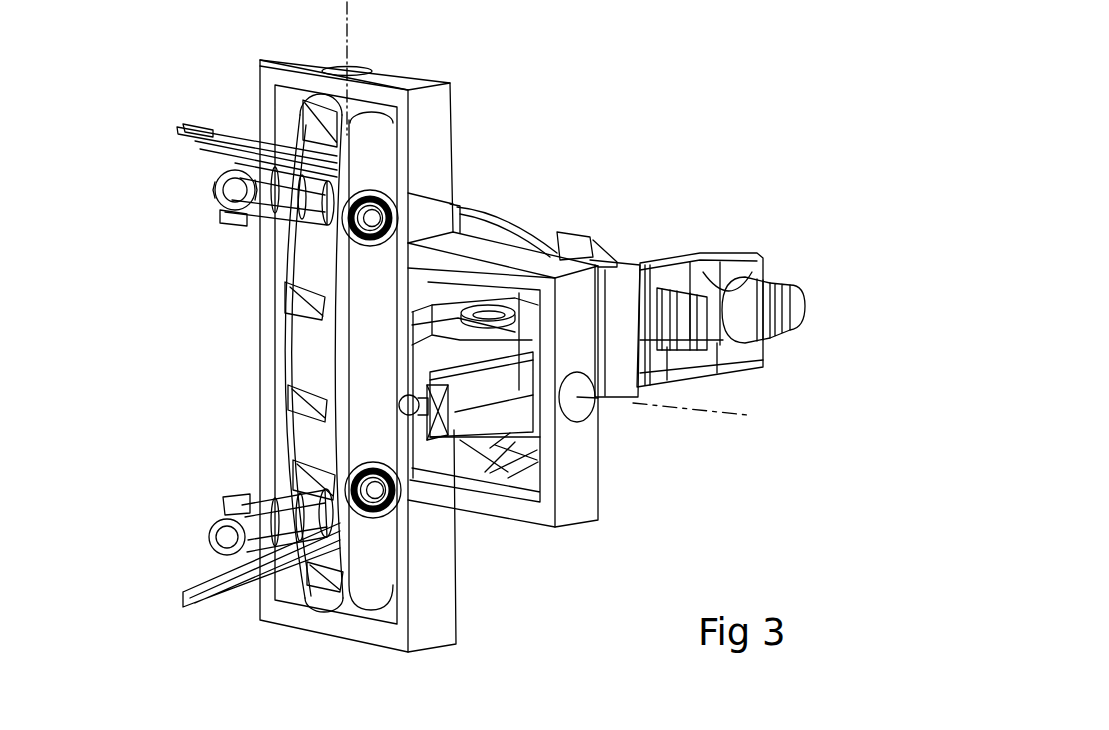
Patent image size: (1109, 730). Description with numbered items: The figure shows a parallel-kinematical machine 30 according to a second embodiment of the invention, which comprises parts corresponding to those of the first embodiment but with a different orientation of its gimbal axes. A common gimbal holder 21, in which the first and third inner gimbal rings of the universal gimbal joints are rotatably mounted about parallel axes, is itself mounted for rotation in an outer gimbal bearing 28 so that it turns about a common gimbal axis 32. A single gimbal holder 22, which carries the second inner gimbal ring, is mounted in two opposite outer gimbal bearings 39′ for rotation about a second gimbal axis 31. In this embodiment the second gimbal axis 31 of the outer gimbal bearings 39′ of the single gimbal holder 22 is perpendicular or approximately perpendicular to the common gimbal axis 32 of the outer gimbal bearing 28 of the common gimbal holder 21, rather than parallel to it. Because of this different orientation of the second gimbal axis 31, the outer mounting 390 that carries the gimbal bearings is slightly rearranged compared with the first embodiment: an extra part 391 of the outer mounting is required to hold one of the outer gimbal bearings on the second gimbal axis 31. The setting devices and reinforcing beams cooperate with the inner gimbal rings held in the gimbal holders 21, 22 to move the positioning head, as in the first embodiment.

The common gimbal holder 21 is at (353, 298).
The single gimbal holder 22 is at (443, 307).
The outer gimbal bearing 28 is at (324, 67).
The parallel-kinematical machine 30 is at (622, 228).
The second gimbal axis 31 is at (675, 410).
The common gimbal axis 32 is at (349, 25).
The outer gimbal bearing 39′ is at (573, 408).
The outer mounting 390 is at (432, 172).
The extra part of the outer mounting 391 is at (428, 453).